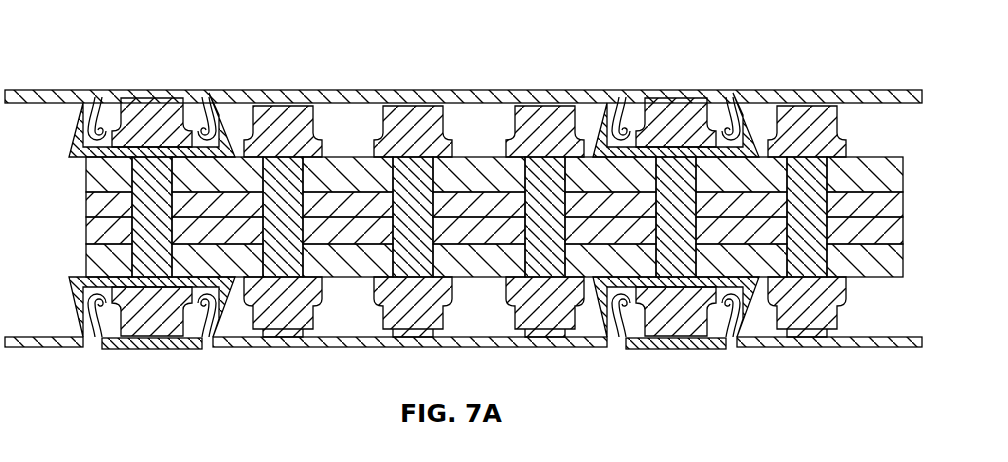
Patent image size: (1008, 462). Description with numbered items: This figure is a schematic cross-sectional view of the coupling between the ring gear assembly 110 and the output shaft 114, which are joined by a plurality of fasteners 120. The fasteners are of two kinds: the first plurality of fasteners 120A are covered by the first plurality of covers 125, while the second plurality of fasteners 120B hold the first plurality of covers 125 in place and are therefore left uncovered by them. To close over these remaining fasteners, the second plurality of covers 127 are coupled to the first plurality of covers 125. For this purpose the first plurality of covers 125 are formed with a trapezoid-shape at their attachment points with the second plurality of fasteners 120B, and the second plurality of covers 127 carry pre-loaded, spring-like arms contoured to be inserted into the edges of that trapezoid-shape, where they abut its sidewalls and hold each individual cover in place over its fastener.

The ring gear assembly 110 is at (494, 138).
The output shaft 114 is at (458, 180).
The plurality of fasteners 120 is at (277, 115).
The first plurality of fasteners 120A is at (557, 107).
The second plurality of fasteners 120B is at (140, 112).
The first plurality of covers 125 is at (347, 97).
The second plurality of covers 127 is at (180, 93).